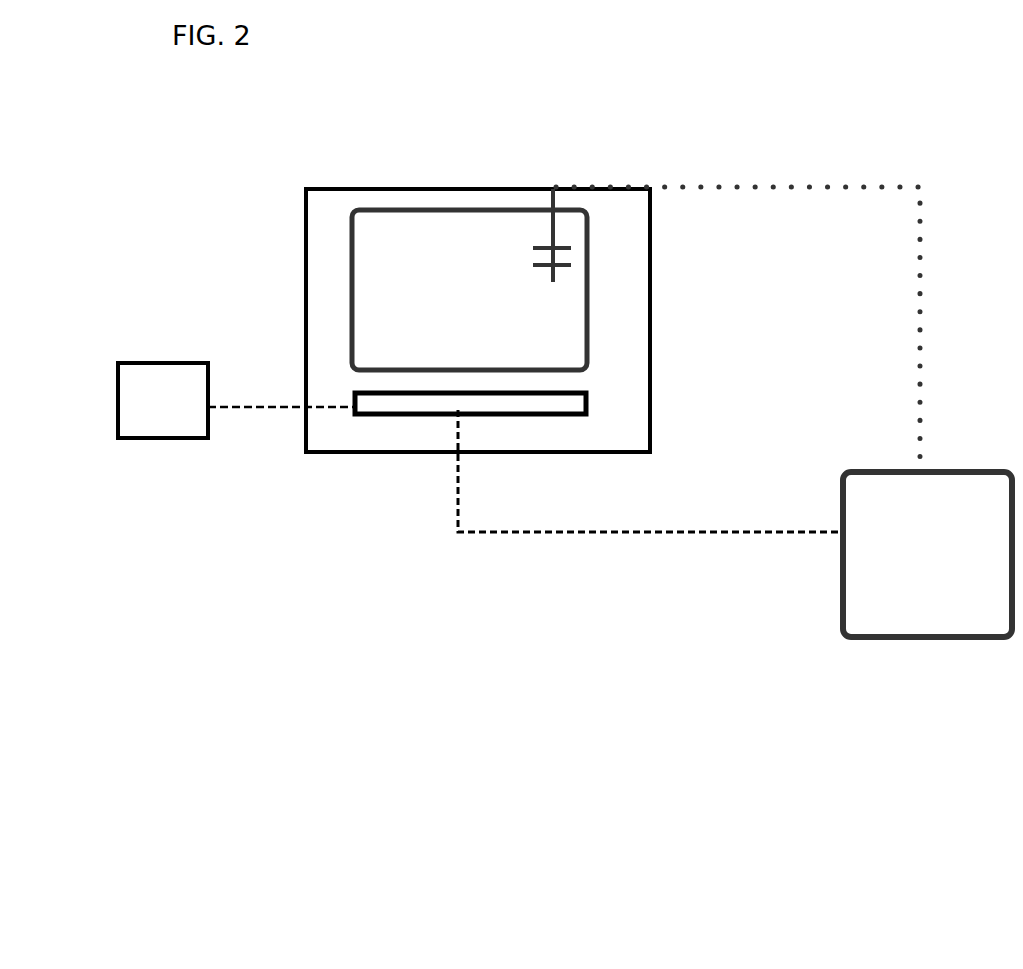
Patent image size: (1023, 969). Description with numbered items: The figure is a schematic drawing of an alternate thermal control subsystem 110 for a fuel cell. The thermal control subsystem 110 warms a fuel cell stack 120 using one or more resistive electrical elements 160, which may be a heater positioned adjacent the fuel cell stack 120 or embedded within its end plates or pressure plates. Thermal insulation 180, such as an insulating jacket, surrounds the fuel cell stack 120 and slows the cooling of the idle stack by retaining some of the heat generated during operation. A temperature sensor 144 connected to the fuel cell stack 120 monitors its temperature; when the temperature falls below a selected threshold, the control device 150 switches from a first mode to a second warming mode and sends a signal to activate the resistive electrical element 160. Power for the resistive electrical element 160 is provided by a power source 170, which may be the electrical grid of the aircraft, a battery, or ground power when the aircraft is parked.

The thermal control subsystem 110 is at (882, 724).
The fuel cell stack 120 is at (385, 160).
The temperature sensor 144 is at (500, 232).
The control device 150 is at (735, 412).
The resistive electrical element 160 is at (372, 407).
The power source 170 is at (236, 400).
The thermal insulation 180 is at (510, 453).